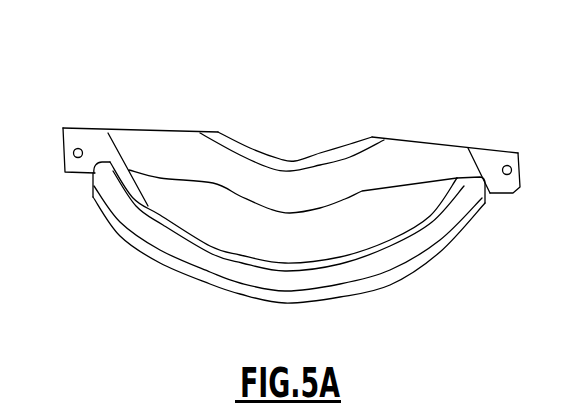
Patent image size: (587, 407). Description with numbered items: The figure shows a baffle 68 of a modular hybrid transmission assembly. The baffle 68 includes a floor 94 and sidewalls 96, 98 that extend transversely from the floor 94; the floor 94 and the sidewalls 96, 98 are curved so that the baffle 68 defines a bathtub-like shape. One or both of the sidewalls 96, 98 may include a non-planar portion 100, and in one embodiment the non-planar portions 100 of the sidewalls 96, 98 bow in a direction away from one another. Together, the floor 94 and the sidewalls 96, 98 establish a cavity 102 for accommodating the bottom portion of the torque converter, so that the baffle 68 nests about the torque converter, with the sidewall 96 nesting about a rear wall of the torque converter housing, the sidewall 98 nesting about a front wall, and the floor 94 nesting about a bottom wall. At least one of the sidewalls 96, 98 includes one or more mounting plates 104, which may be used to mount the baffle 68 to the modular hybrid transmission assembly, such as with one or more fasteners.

The baffle 68 is at (303, 90).
The floor 94 is at (490, 193).
The sidewall 96 is at (392, 257).
The sidewall 98 is at (445, 160).
The non-planar portion 100 is at (293, 165).
The cavity 102 is at (382, 152).
The mounting plate 104 is at (92, 147).